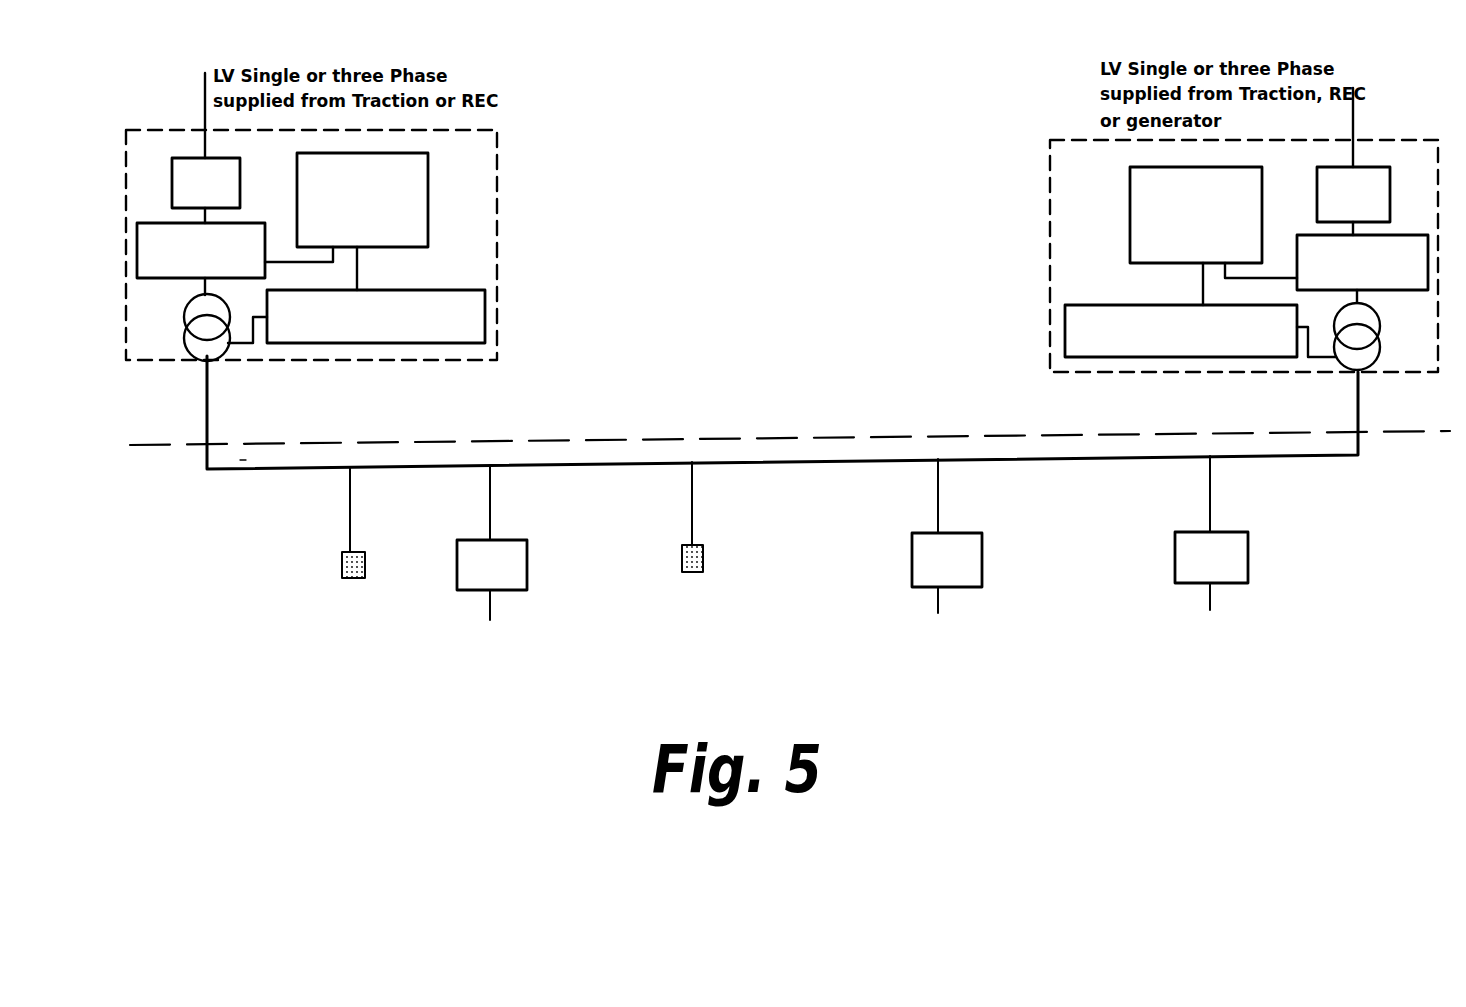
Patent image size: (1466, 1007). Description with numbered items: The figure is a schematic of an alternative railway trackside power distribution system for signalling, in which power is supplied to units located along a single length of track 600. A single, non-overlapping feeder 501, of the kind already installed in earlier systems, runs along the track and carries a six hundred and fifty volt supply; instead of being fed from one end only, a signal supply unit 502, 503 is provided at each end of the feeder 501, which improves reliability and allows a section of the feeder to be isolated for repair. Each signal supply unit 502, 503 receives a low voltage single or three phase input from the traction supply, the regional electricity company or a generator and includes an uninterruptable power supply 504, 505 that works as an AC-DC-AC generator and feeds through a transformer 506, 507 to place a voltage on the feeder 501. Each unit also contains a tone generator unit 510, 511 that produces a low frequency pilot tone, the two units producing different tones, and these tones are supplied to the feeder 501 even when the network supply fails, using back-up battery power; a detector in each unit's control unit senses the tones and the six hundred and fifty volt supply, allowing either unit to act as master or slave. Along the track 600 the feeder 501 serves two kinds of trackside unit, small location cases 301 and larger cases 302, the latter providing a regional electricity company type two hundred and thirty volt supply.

The small location case 301 is at (340, 572).
The larger case 302 is at (462, 578).
The feeder 501 is at (667, 458).
The signal supply unit 502 is at (358, 217).
The signal supply unit 503 is at (1195, 230).
The uninterruptable power supply 504 is at (230, 200).
The uninterruptable power supply 505 is at (1378, 212).
The transformer 506 is at (195, 331).
The transformer 507 is at (1380, 347).
The tone generator unit 510 is at (401, 332).
The tone generator unit 511 is at (1206, 346).
The track 600 is at (1418, 433).